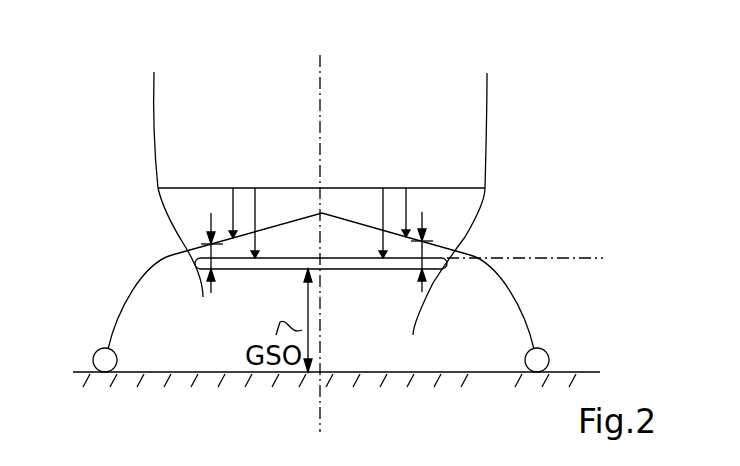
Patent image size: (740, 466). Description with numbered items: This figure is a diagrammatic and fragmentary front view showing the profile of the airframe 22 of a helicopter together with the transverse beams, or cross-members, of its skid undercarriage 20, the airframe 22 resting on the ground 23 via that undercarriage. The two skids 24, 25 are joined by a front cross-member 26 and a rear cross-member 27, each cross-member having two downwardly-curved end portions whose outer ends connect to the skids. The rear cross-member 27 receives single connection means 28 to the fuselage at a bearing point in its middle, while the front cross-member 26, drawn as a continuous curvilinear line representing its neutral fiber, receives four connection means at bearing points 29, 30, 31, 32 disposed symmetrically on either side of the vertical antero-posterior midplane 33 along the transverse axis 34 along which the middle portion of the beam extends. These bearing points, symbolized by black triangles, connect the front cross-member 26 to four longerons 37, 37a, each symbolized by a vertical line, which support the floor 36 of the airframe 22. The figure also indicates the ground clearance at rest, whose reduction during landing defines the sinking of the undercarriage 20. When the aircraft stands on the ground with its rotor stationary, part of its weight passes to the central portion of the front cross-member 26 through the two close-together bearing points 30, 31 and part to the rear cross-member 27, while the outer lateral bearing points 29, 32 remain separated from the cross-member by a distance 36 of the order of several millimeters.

The skid undercarriage 20 is at (615, 280).
The airframe 22 is at (487, 108).
The ground 23 is at (504, 403).
The skid 24 is at (93, 358).
The skid 25 is at (551, 352).
The front cross-member 26 is at (470, 262).
The rear cross-member 27 is at (477, 260).
The single connection means 28 is at (322, 212).
The outer lateral bearing point 29 is at (233, 233).
The bearing point 30 is at (246, 268).
The bearing point 31 is at (379, 270).
The outer lateral bearing point 32 is at (407, 215).
The antero-posterior midplane 33 is at (321, 88).
The transverse axis 34 is at (587, 258).
The floor 36 is at (203, 297).
The longeron 37 is at (221, 186).
The longeron 37a is at (246, 188).